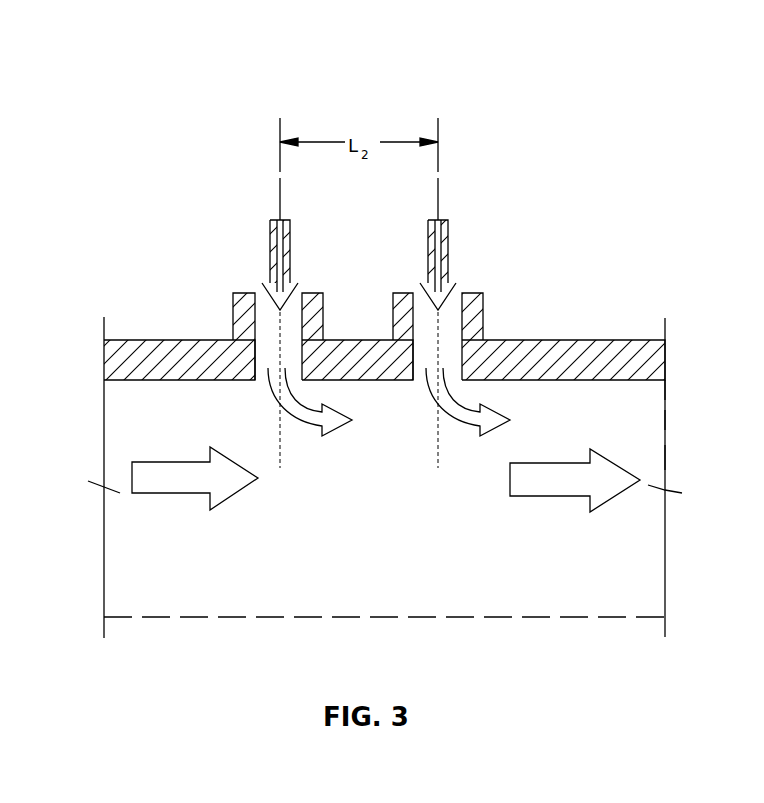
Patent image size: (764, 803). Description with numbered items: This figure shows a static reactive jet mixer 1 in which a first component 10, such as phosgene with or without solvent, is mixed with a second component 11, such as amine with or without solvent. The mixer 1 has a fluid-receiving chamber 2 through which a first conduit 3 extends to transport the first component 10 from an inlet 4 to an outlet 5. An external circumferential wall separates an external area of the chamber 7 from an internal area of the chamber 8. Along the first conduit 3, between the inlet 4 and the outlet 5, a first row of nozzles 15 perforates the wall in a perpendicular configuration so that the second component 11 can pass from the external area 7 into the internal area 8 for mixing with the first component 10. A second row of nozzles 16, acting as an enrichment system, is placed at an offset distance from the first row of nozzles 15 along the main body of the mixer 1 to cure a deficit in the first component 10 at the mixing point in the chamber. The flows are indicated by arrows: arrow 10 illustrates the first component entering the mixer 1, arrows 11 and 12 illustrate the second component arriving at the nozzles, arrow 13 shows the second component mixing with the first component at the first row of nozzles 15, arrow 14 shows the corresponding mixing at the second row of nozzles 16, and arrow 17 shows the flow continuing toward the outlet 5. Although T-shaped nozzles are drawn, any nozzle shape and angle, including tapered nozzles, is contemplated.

The static reactive jet mixer 1 is at (600, 338).
The fluid-receiving chamber 2 is at (660, 405).
The first conduit 3 is at (650, 430).
The inlet 4 is at (104, 537).
The outlet 5 is at (647, 465).
The external area of the chamber 7 is at (525, 330).
The internal area of the chamber 8 is at (575, 432).
The first component 10 is at (172, 495).
The second component 11 is at (290, 247).
The flow arrow 12 is at (450, 250).
The mixing flow arrow 13 is at (300, 437).
The flow arrow 14 is at (461, 437).
The first row of nozzles 15 is at (242, 292).
The second row of nozzles 16 is at (475, 292).
The flow arrow 17 is at (555, 497).